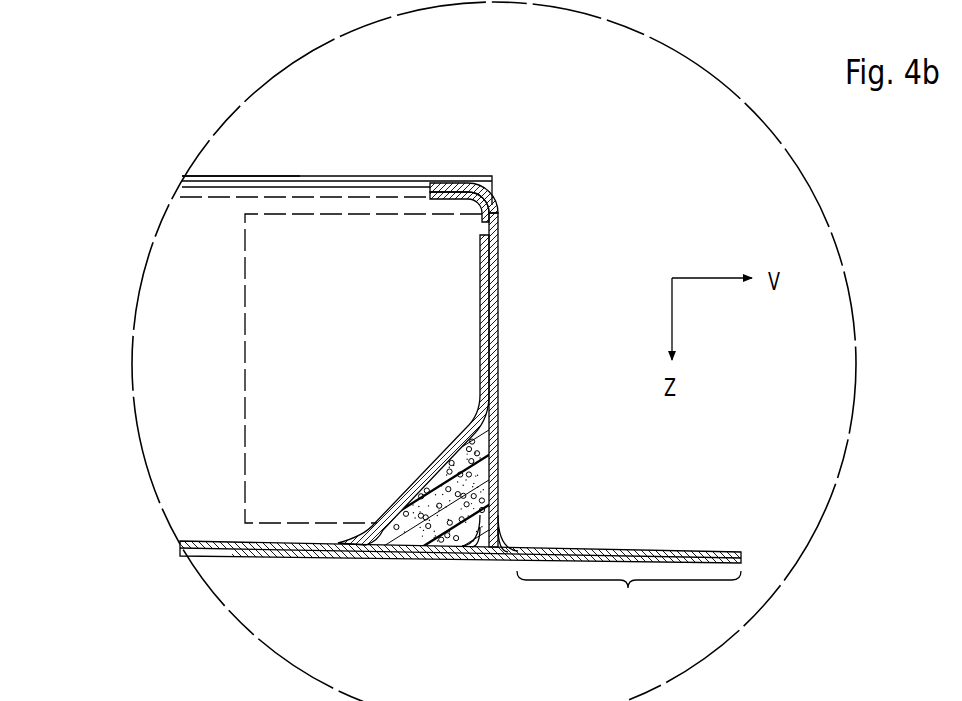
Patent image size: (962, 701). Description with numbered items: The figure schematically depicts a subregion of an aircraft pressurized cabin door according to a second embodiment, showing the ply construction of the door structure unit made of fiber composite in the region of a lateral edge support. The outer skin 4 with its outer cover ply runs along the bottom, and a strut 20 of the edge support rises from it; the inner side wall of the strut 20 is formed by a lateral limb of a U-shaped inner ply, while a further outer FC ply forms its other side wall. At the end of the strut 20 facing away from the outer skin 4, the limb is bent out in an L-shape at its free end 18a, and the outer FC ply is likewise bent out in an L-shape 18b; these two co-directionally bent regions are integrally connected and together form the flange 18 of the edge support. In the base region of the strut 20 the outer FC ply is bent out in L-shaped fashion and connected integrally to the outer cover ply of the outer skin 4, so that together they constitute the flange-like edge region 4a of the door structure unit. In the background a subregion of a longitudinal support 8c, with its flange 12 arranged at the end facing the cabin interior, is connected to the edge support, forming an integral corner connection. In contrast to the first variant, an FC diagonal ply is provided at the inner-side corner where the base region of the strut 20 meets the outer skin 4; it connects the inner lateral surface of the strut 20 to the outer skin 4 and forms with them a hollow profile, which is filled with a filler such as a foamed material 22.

The outer skin 4 is at (378, 558).
The flange-like edge region 4a is at (629, 595).
The longitudinal support 8c is at (241, 170).
The flange 12 is at (330, 177).
The flange 18 is at (479, 322).
The free end 18a is at (433, 201).
The L-shaped bent-out region 18b is at (437, 185).
The strut 20 is at (500, 380).
The foamed material 22 is at (487, 497).